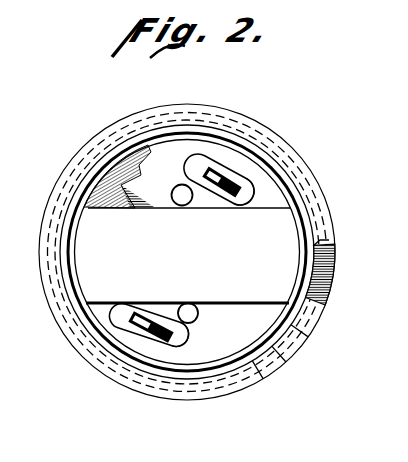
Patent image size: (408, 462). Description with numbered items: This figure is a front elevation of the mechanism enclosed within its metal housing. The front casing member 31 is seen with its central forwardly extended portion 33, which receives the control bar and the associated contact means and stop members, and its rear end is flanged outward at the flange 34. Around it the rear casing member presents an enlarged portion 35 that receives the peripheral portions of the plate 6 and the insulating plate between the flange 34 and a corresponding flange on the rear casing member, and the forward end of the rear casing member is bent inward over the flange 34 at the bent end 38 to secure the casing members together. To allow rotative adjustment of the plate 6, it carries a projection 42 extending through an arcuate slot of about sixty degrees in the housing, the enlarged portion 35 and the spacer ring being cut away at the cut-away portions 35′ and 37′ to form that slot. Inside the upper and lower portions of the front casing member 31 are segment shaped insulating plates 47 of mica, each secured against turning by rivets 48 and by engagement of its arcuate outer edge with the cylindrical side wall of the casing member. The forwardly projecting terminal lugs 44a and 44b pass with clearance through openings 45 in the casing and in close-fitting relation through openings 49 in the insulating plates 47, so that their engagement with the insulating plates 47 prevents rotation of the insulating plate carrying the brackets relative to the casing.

The plate 6 is at (302, 355).
The front casing member 31 is at (128, 157).
The central forwardly extended portion 33 is at (78, 247).
The flange 34 is at (160, 133).
The enlarged portion 35 is at (54, 201).
The cut-away portion 35′ is at (335, 268).
The cut-away portion 37′ is at (320, 244).
The inwardly bent forward end 38 is at (216, 388).
The projection 42 is at (323, 319).
The terminal lug 44a is at (254, 182).
The terminal lug 44b is at (172, 340).
The opening 45 is at (219, 172).
The segment shaped insulating plate 47 is at (100, 175).
The rivet 48 is at (179, 191).
The opening 49 is at (233, 188).